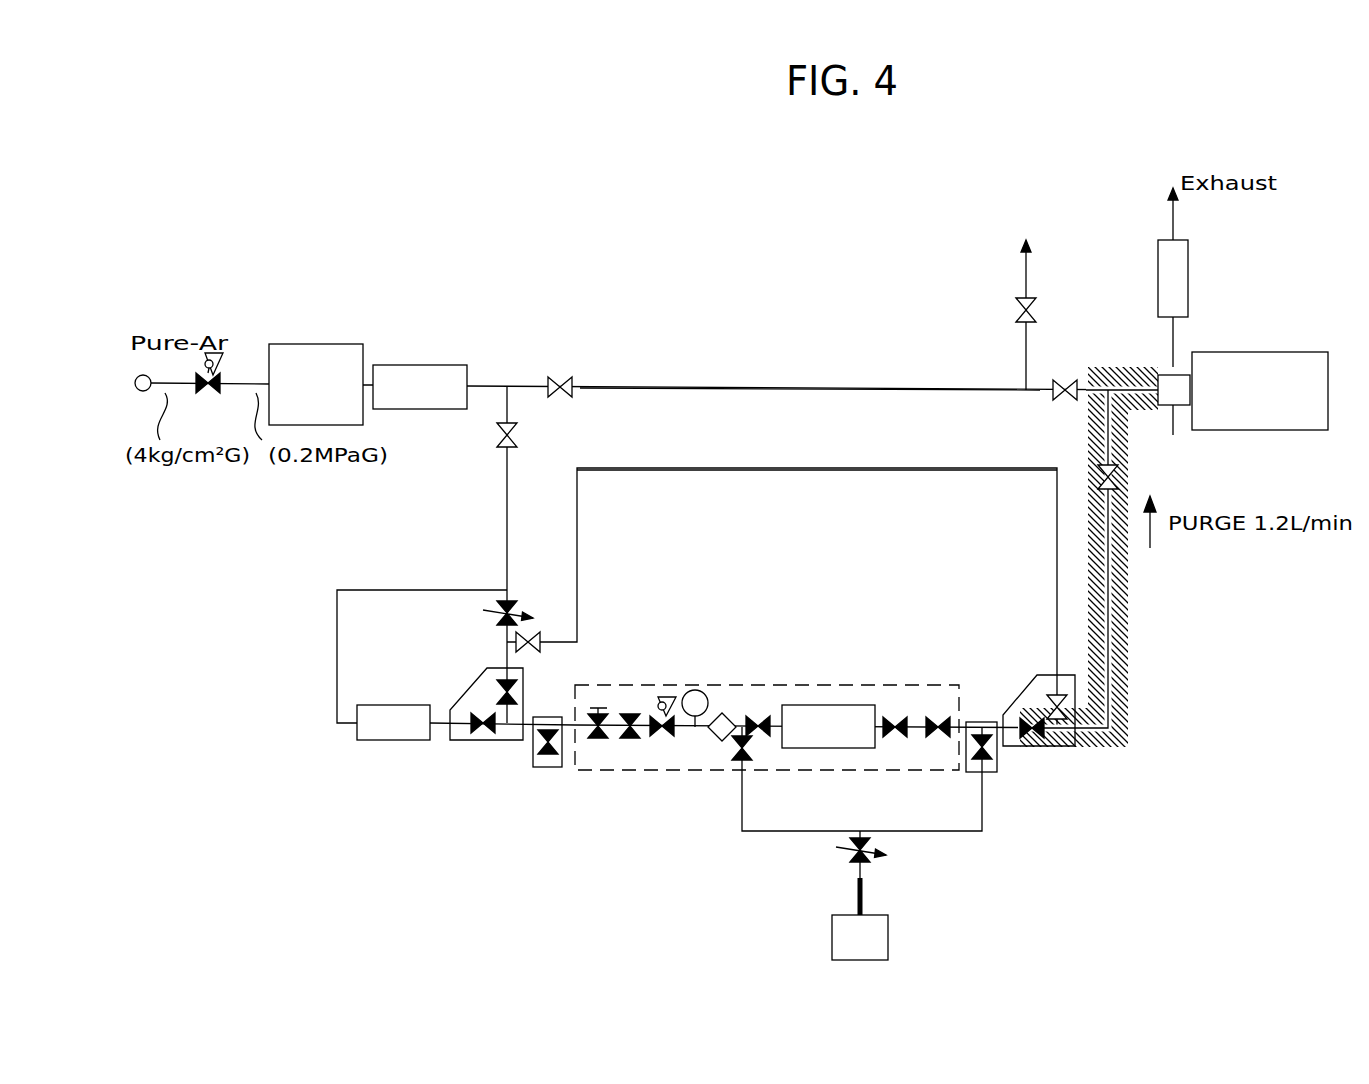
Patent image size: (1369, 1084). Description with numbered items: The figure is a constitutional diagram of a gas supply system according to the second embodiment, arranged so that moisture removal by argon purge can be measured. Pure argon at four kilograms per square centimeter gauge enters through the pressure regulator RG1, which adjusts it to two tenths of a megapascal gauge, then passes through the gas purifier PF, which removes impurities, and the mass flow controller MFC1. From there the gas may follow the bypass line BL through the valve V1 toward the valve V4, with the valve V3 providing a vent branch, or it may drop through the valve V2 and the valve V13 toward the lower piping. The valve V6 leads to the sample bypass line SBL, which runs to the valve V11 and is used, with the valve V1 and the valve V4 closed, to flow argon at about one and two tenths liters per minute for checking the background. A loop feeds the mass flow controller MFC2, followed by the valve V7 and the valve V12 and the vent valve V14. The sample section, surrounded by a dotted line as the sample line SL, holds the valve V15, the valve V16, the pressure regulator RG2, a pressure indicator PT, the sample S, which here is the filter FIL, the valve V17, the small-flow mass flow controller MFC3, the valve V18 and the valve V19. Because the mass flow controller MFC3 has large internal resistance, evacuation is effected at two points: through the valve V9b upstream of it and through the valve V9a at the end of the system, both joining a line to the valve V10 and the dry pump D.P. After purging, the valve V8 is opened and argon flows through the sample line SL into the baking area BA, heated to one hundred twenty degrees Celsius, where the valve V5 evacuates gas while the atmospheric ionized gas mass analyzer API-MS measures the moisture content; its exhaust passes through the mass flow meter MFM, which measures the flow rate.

The pressure regulator RG1 is at (211, 389).
The gas purifier PF is at (316, 384).
The mass flow controller MFC1 is at (420, 387).
The valve V1 is at (560, 377).
The valve V2 is at (497, 436).
The bypass line BL is at (766, 386).
The valve V3 is at (1016, 312).
The valve V4 is at (1062, 396).
The mass flow meter MFM is at (1173, 311).
The atmospheric ionized gas mass analyzer API-MS is at (1243, 391).
The valve V5 is at (1120, 477).
The sample bypass line SBL is at (893, 470).
The baking area BA is at (1130, 640).
The valve V13 is at (512, 610).
The valve V6 is at (537, 641).
The valve V12 is at (500, 693).
The mass flow controller MFC2 is at (393, 722).
The valve V7 is at (478, 732).
The valve V14 is at (548, 755).
The sample line SL is at (826, 685).
The valve V15 is at (601, 708).
The valve V16 is at (636, 715).
The pressure regulator RG2 is at (661, 727).
The pressure transducer PT is at (695, 708).
The sample S is at (733, 714).
The filter FIL is at (724, 742).
The valve V17 is at (763, 715).
The valve V9b is at (752, 755).
The mass flow controller MFC3 is at (828, 726).
The valve V18 is at (892, 715).
The valve V19 is at (940, 715).
The valve V9a is at (988, 760).
The valve V11 is at (1049, 699).
The valve V8 is at (1035, 738).
The valve V10 is at (867, 862).
The dry pump D.P is at (911, 938).